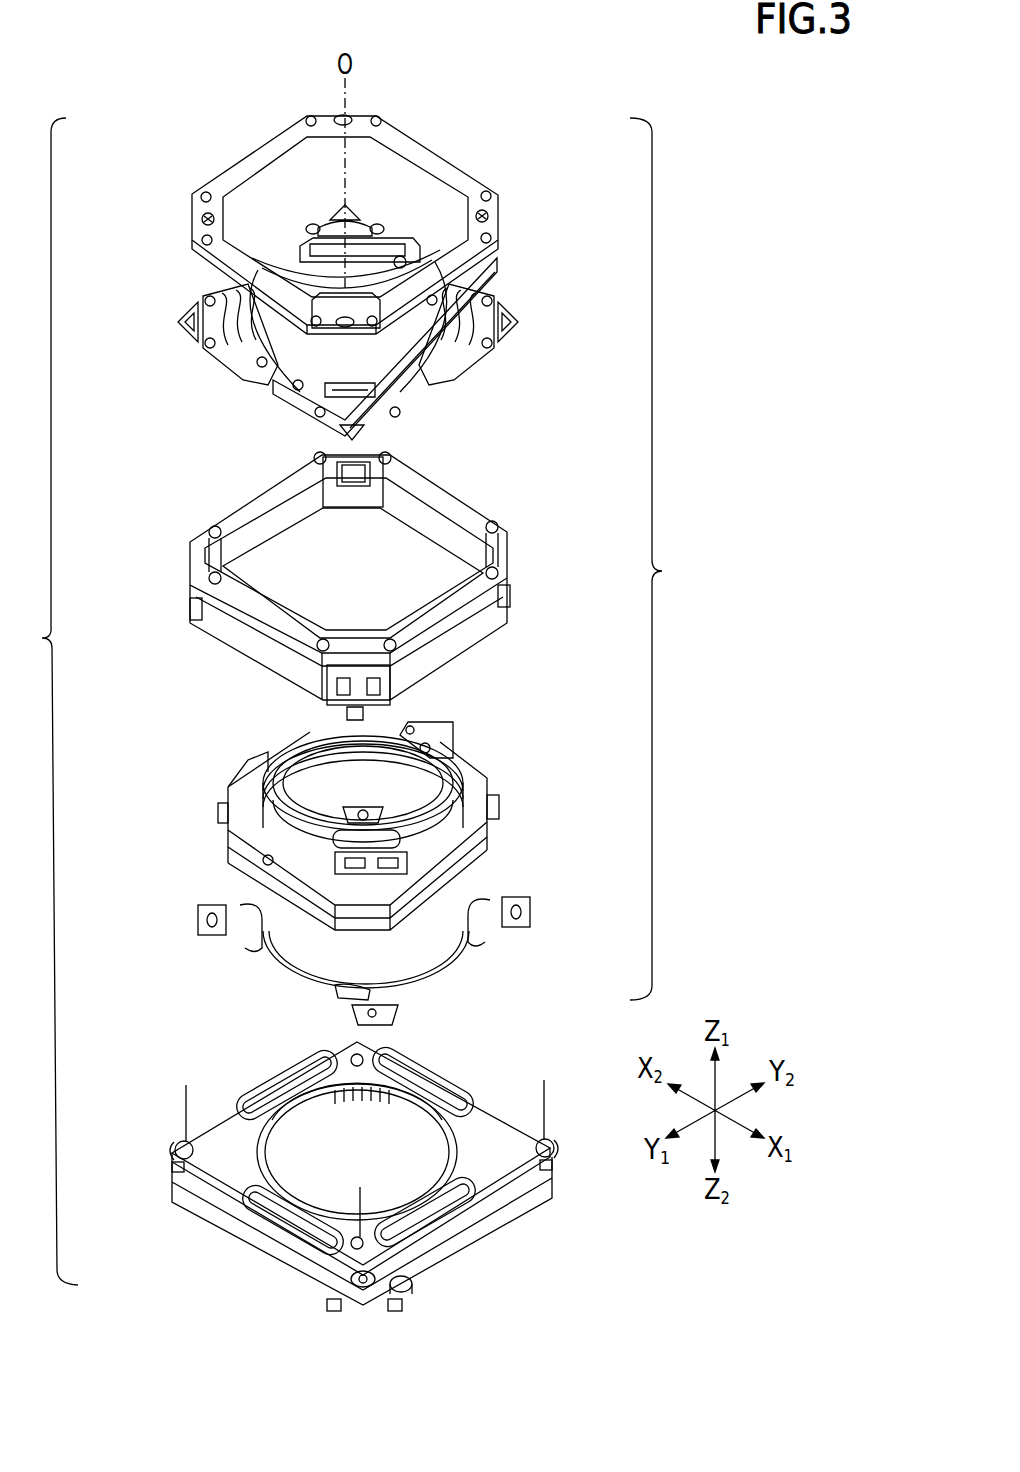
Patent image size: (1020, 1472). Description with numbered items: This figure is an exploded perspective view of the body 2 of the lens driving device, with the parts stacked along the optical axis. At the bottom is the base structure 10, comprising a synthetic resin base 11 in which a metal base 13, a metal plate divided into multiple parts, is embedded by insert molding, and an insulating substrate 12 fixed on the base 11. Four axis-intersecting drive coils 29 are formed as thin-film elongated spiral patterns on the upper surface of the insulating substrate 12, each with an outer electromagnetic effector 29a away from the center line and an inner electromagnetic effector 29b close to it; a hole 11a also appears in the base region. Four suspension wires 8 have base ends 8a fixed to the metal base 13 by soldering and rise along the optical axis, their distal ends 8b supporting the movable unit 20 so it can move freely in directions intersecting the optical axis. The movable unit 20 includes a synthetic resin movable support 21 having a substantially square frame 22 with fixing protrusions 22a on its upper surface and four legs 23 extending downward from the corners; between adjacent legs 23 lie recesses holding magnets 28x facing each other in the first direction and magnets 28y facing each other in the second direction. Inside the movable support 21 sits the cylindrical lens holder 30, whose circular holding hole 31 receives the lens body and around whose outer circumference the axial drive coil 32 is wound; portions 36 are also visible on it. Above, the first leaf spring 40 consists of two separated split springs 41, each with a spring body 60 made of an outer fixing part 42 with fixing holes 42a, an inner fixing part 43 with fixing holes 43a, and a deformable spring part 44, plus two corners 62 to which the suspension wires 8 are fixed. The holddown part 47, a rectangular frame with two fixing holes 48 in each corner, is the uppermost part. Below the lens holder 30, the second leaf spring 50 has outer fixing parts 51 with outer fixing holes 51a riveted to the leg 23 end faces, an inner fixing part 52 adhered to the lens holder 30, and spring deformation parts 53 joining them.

The body 2 is at (50, 701).
The suspension wire 8 is at (347, 1030).
The base end of suspension wire 8a is at (170, 1149).
The distal end of suspension wire 8b is at (370, 995).
The base structure 10 is at (548, 1237).
The base 11 is at (472, 1243).
The base hole 11a is at (408, 1296).
The insulating substrate 12 is at (206, 1200).
The metal base 13 is at (168, 1166).
The movable unit 20 is at (663, 559).
The movable support 21 is at (470, 520).
The frame 22 is at (262, 613).
The fixing protrusion 22a is at (314, 459).
The leg 23 is at (352, 497).
The magnet 28x is at (266, 534).
The magnet 28y is at (432, 540).
The axis-intersecting drive coil 29 is at (292, 1070).
The outer electromagnetic effector 29a is at (255, 1080).
The inner electromagnetic effector 29b is at (305, 1098).
The lens holder 30 is at (482, 778).
The holding hole 31 is at (310, 745).
The axial drive coil 32 is at (420, 888).
The spring fixing portion 36 is at (429, 744).
The first leaf spring 40 is at (470, 360).
The split spring 41 is at (232, 362).
The outer fixing part 42 is at (222, 300).
The fixing hole 42a is at (312, 225).
The inner fixing part 43 is at (263, 358).
The fixing hole 43a is at (400, 256).
The deformable spring part 44 is at (284, 262).
The holddown part 47 is at (442, 158).
The fixing hole 48 is at (311, 116).
The second leaf spring 50 is at (452, 964).
The outer fixing part 51 is at (522, 903).
The outer fixing hole 51a is at (204, 914).
The inner fixing part 52 is at (292, 962).
The spring deformation part 53 is at (480, 893).
The spring body 60 is at (200, 300).
The corner 62 is at (345, 207).